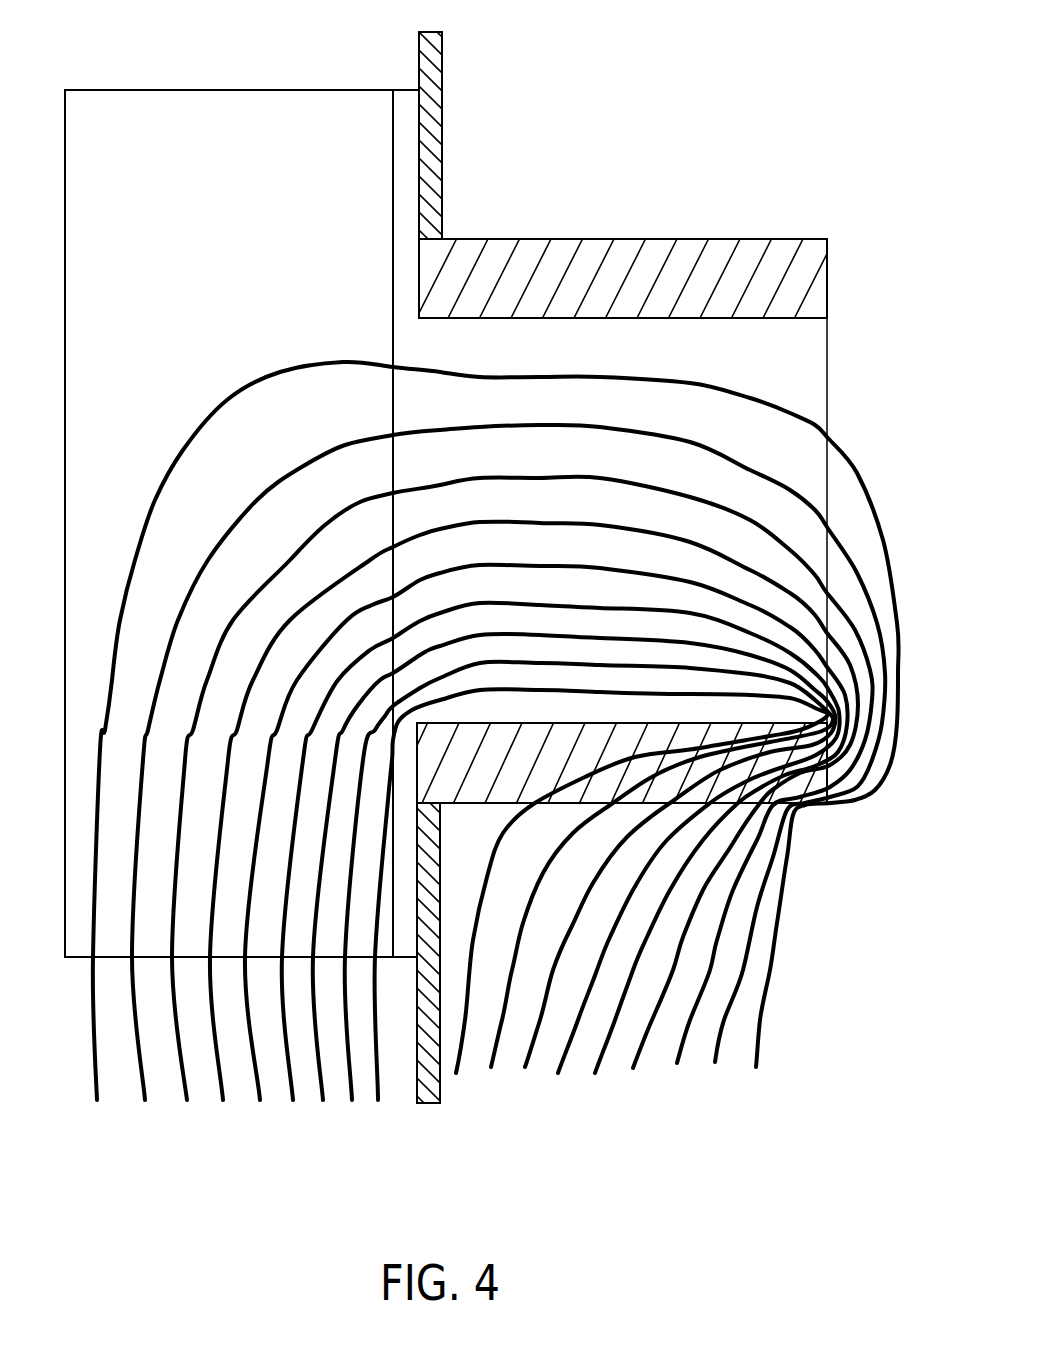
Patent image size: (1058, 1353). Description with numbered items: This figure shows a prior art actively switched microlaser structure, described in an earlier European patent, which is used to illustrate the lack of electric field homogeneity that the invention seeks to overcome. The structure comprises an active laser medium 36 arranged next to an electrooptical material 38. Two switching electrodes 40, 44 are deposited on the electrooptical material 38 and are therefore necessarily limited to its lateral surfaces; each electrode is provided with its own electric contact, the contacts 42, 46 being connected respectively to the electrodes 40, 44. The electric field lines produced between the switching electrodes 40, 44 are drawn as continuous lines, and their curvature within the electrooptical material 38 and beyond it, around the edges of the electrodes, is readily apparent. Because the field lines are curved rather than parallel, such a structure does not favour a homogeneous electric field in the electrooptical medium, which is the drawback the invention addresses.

The active laser medium 36 is at (182, 108).
The electrooptical material 38 is at (802, 357).
The switching electrode 40 is at (586, 258).
The electric contact 42 is at (430, 65).
The switching electrode 44 is at (500, 770).
The electric contact 46 is at (423, 1060).